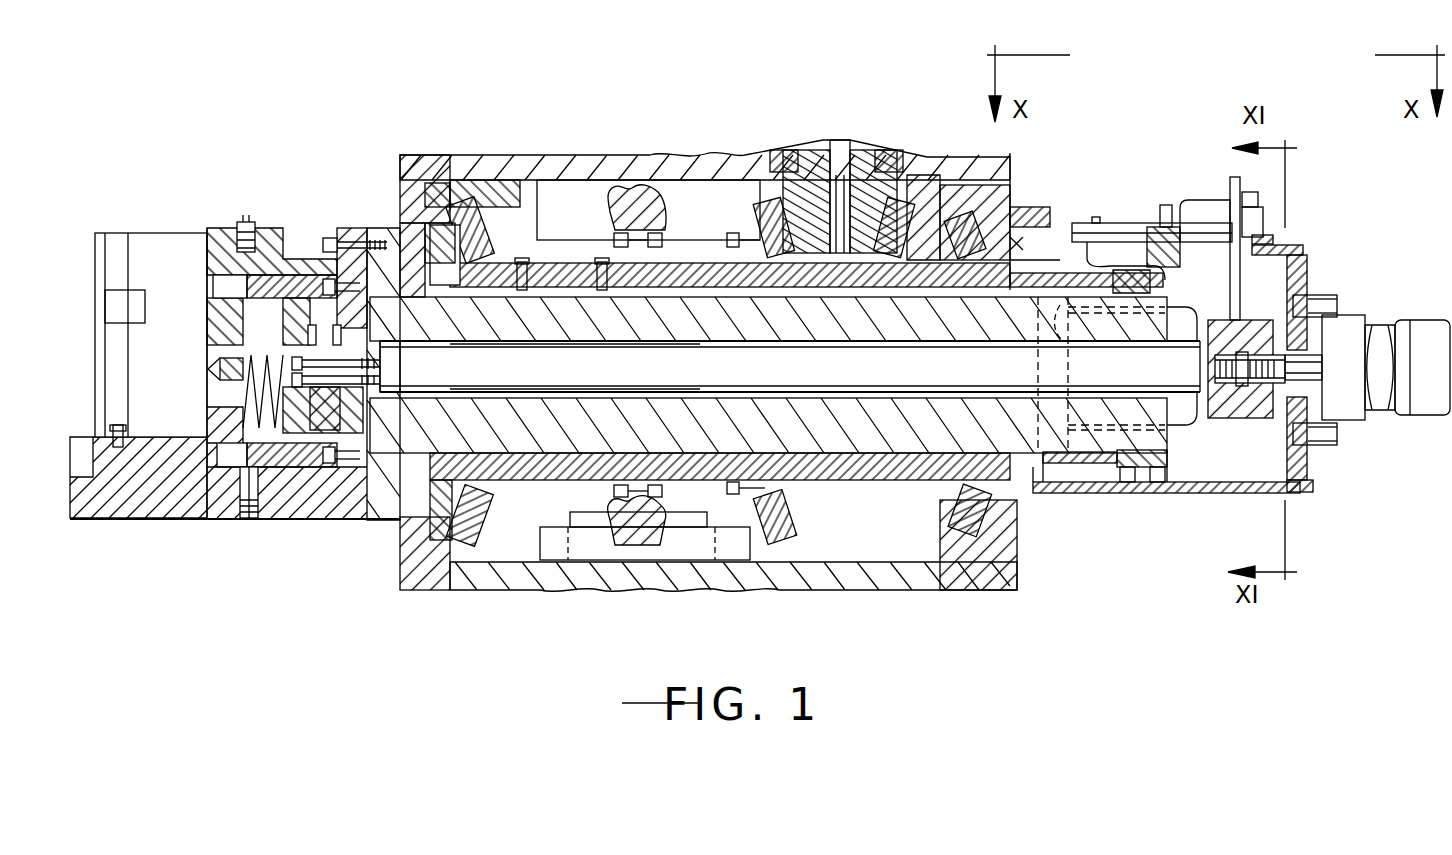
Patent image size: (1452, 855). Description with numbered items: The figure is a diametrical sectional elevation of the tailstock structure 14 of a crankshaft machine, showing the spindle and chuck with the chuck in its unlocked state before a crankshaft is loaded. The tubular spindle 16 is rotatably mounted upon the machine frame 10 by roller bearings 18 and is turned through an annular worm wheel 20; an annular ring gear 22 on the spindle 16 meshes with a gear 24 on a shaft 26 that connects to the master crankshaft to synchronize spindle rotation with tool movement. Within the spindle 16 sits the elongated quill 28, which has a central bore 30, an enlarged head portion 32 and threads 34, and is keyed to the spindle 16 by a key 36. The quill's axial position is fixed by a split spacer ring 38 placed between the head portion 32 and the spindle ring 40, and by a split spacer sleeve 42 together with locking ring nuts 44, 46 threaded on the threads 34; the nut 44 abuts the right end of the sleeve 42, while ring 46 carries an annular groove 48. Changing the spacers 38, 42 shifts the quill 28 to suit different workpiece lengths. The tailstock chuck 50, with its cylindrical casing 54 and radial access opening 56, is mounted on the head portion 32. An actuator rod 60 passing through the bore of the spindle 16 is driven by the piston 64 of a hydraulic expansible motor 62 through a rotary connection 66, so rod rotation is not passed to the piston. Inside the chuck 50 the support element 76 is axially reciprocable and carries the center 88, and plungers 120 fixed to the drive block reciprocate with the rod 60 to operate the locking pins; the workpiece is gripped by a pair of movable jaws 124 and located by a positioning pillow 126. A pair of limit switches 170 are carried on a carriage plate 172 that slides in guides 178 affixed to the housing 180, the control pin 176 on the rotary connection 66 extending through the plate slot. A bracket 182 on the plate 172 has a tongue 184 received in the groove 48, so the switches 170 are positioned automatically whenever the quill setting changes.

The frame 10 is at (742, 570).
The tailstock structure 14 is at (347, 605).
The spindle 16 is at (907, 462).
The roller bearings 18 is at (494, 506).
The annular worm wheel 20 is at (608, 530).
The annular ring gear 22 is at (797, 524).
The gear 24 is at (930, 186).
The shaft 26 is at (858, 150).
The quill 28 is at (682, 416).
The central bore 30 is at (897, 379).
The head portion 32 is at (382, 498).
The threads 34 is at (1136, 314).
The key 36 is at (558, 290).
The split spacer ring 38 is at (402, 248).
The spindle ring 40 is at (456, 236).
The split spacer sleeve 42 is at (1077, 463).
The locking ring nut 44 is at (1125, 470).
The locking ring nut 46 is at (1143, 470).
The annular groove 48 is at (1160, 470).
The tailstock chuck 50 is at (158, 508).
The casing 54 is at (312, 490).
The access opening 56 is at (152, 237).
The actuator rod 60 is at (610, 379).
The expansible motor 62 is at (1375, 330).
The piston 64 is at (1300, 367).
The rotary connection 66 is at (1240, 418).
The support element 76 is at (282, 400).
The center 88 is at (210, 370).
The plungers 120 is at (305, 262).
The movable jaws 124 is at (146, 303).
The positioning pillow 126 is at (125, 437).
The limit switches 170 is at (1206, 210).
The carriage plate 172 is at (1274, 240).
The control pin 176 is at (1275, 287).
The guides 178 is at (1113, 222).
The housing 180 is at (1292, 488).
The bracket 182 is at (1163, 260).
The tongue 184 is at (1087, 265).